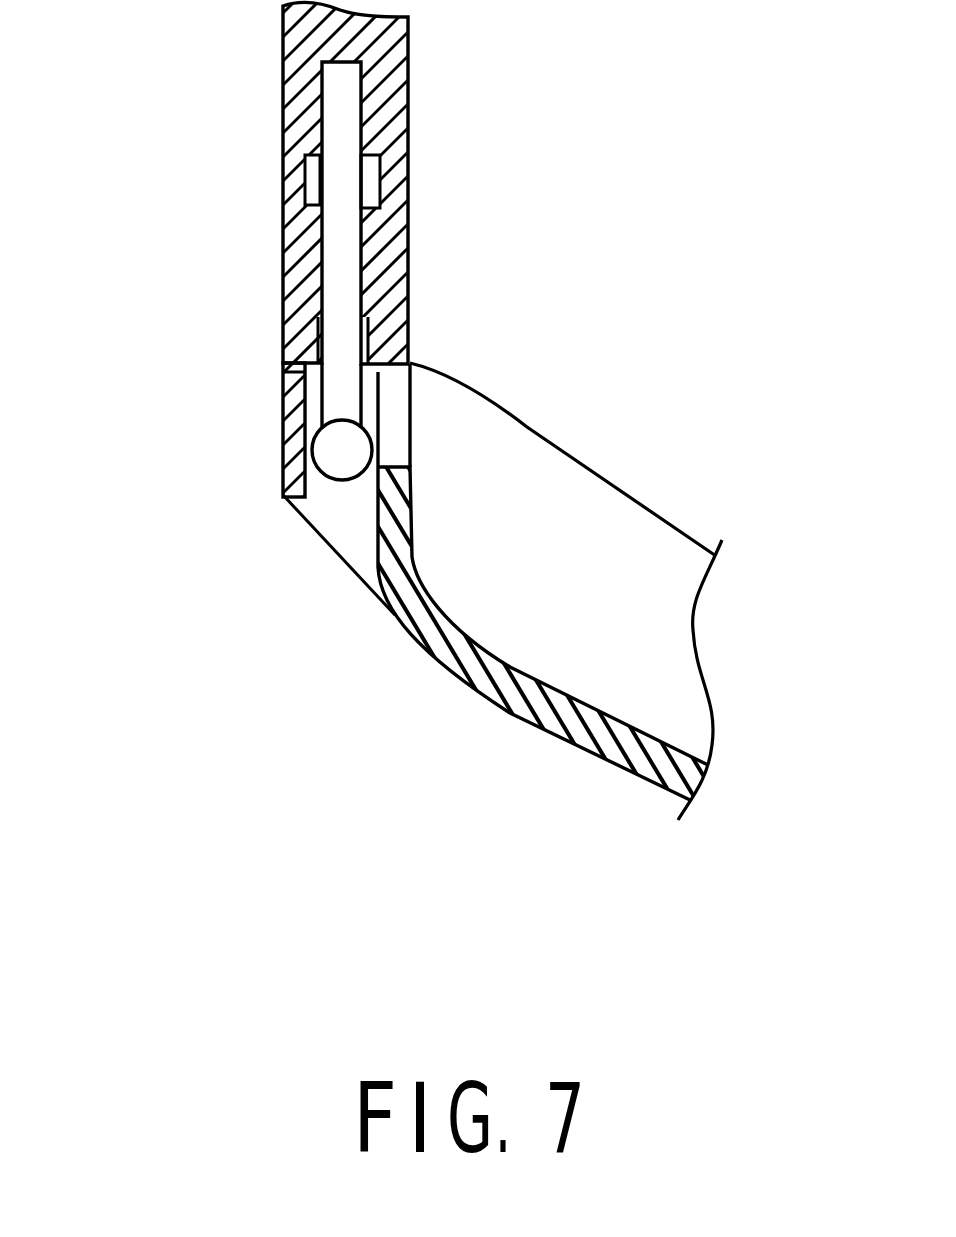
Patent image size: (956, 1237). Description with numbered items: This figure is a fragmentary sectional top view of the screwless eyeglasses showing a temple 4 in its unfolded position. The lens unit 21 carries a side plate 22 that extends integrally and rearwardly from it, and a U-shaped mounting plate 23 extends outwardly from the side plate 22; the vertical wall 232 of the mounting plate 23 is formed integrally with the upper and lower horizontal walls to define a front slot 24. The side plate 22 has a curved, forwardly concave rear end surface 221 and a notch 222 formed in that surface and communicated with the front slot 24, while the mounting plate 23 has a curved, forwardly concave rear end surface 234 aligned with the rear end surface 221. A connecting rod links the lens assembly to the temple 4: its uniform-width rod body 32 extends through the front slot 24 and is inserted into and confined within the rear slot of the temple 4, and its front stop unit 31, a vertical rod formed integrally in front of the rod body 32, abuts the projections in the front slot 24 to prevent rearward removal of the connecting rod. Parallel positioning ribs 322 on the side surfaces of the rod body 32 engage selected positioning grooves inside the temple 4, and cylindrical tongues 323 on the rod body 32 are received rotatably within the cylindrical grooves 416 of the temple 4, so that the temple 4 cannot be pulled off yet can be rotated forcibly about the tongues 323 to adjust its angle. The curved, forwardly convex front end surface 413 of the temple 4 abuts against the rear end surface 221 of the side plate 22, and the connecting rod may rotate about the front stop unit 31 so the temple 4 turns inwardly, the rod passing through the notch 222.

The temple 4 is at (440, 38).
The cylindrical groove 416 is at (283, 155).
The cylindrical tongue 323 is at (313, 184).
The rod body 32 is at (332, 226).
The positioning rib 322 is at (372, 322).
The front end surface 413 is at (313, 347).
The rear end surface 221 is at (365, 371).
The notch 222 is at (388, 432).
The front stop unit 31 is at (337, 449).
The rear end surface 234 is at (283, 386).
The vertical wall 232 is at (283, 427).
The mounting plate 23 is at (240, 490).
The front slot 24 is at (342, 515).
The side plate 22 is at (400, 558).
The lens unit 21 is at (582, 738).